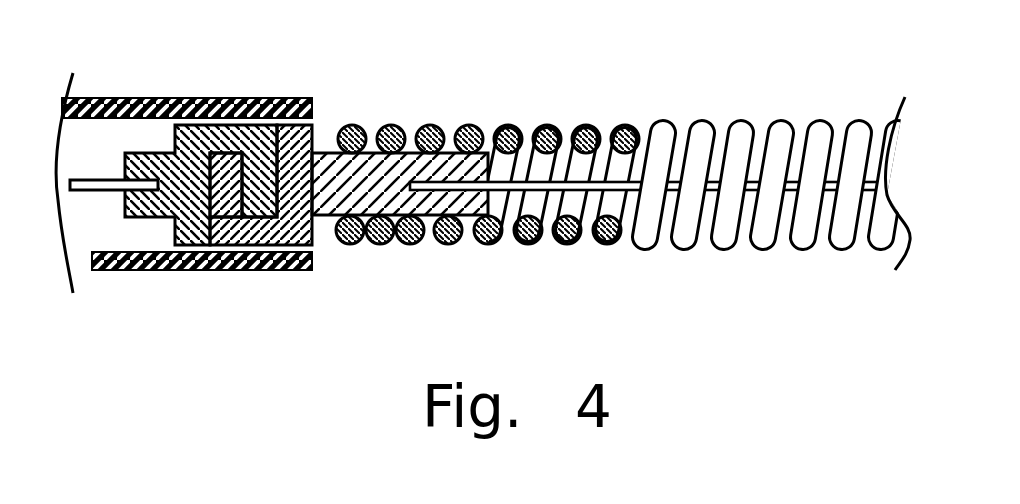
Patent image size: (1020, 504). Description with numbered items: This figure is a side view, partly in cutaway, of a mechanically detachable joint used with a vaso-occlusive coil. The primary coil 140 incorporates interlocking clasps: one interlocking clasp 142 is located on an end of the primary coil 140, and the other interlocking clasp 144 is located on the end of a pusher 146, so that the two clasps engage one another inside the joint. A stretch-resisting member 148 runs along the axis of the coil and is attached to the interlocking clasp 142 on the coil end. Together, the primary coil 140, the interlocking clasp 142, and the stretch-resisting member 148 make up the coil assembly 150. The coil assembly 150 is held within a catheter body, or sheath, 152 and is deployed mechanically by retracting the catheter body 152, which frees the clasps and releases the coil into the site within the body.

The primary coil 140 is at (740, 122).
The interlocking clasp 142 is at (308, 136).
The interlocking clasp 144 is at (183, 230).
The pusher 146 is at (90, 180).
The stretch-resisting member 148 is at (512, 192).
The coil assembly 150 is at (531, 74).
The catheter body (or sheath) 152 is at (280, 272).